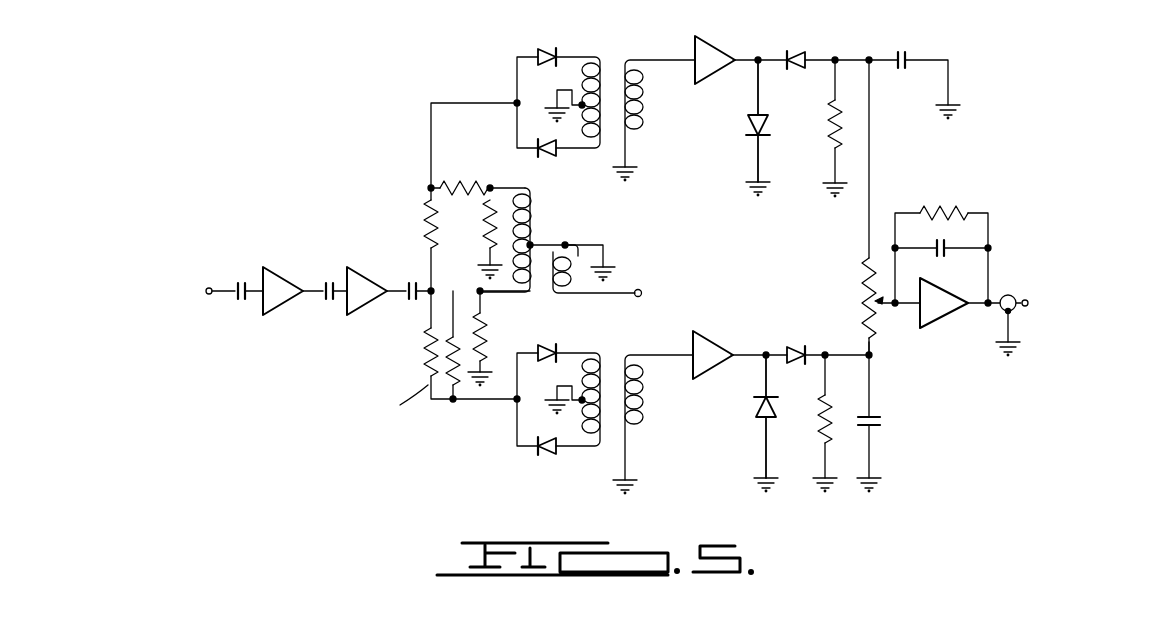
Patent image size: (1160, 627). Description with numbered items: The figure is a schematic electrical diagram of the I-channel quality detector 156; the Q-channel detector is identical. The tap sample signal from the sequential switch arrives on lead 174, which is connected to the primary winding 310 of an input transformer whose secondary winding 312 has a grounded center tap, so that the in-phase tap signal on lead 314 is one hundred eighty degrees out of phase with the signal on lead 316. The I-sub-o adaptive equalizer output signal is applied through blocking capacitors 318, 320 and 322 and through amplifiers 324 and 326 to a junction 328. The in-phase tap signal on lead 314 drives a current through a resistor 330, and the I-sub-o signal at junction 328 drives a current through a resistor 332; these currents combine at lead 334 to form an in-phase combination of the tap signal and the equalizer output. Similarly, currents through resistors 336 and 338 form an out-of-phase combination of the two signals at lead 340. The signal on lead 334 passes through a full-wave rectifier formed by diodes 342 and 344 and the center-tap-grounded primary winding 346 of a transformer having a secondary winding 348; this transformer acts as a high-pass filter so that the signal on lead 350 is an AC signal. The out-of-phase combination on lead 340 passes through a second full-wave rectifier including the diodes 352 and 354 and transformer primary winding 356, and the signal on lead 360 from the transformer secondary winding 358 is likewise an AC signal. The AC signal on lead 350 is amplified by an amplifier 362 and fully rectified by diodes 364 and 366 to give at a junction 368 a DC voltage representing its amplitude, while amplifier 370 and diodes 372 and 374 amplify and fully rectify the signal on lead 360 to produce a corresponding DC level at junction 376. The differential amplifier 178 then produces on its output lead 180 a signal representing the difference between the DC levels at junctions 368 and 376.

The I-channel quality detector 156 is at (398, 70).
The lead 174 is at (641, 290).
The differential amplifier 178 is at (945, 330).
The output lead 180 is at (1029, 300).
The primary winding 310 is at (572, 245).
The secondary winding 312 is at (538, 217).
The lead 314 is at (531, 185).
The lead 316 is at (528, 295).
The blocking capacitor 318 is at (234, 304).
The blocking capacitor 320 is at (326, 305).
The blocking capacitor 322 is at (406, 300).
The amplifier 324 is at (278, 315).
The amplifier 326 is at (357, 317).
The junction 328 is at (435, 292).
The resistor 330 is at (480, 186).
The resistor 332 is at (425, 229).
The lead 334 is at (425, 121).
The resistor 336 is at (480, 344).
The resistor 338 is at (427, 362).
The lead 340 is at (480, 406).
The diode 342 is at (546, 56).
The diode 344 is at (558, 160).
The primary winding 346 is at (602, 80).
The secondary winding 348 is at (644, 113).
The lead 350 is at (660, 60).
The diode 352 is at (544, 346).
The diode 354 is at (544, 454).
The transformer primary winding 356 is at (596, 428).
The transformer secondary winding 358 is at (641, 405).
The lead 360 is at (660, 354).
The amplifier 362 is at (718, 52).
The diode 364 is at (802, 56).
The diode 366 is at (746, 136).
The junction 368 is at (872, 56).
The amplifier 370 is at (719, 338).
The diode 372 is at (754, 416).
The diode 374 is at (795, 350).
The junction 376 is at (872, 357).